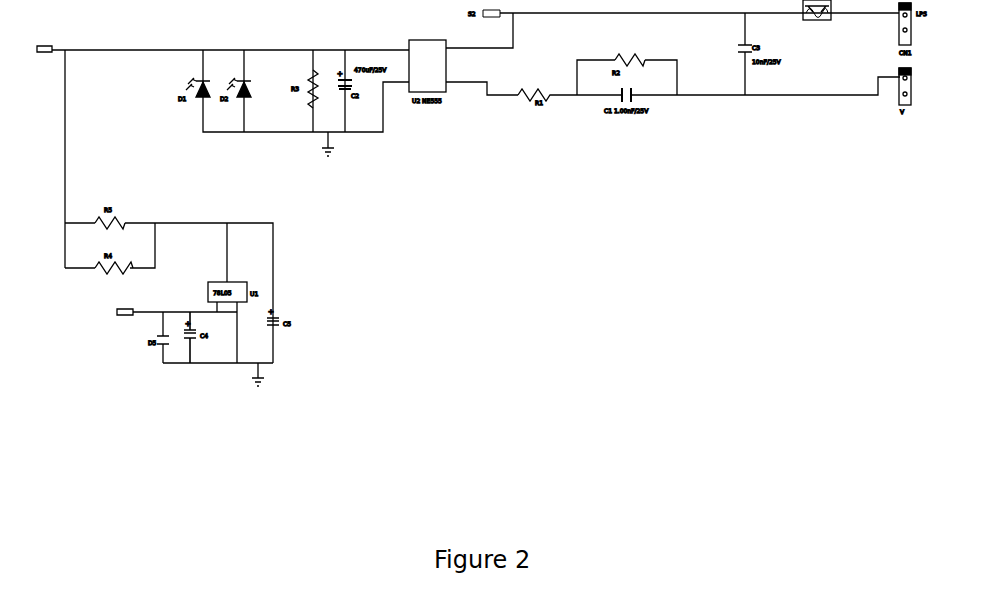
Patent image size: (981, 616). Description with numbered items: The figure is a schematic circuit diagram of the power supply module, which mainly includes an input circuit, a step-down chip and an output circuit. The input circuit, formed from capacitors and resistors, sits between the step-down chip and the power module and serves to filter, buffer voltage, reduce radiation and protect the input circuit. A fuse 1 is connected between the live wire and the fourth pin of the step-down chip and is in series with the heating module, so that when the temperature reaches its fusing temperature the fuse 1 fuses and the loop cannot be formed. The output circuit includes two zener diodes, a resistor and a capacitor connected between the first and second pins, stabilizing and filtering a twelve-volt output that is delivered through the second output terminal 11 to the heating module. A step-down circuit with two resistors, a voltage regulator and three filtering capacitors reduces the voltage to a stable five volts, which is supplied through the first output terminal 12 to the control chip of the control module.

The fuse 1 is at (813, 21).
The second output terminal 11 is at (53, 49).
The first output terminal 12 is at (131, 314).